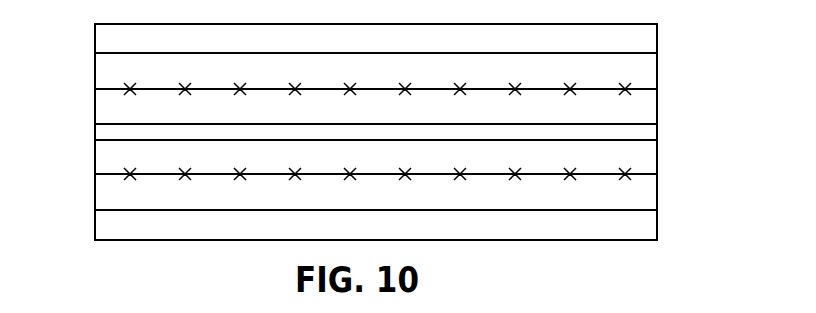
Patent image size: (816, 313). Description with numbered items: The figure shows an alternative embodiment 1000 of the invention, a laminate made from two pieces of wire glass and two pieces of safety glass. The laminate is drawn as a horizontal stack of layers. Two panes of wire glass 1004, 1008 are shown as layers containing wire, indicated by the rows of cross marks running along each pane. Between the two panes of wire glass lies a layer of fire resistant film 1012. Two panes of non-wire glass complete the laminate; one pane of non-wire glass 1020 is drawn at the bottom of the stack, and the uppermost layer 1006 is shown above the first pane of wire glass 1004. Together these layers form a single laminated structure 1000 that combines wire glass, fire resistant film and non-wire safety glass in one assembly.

The alternative embodiment 1000 is at (712, 116).
The top layer 1006 is at (102, 40).
The pane of wire glass 1004 is at (102, 75).
The layer of fire resistant film 1012 is at (102, 133).
The pane of wire glass 1008 is at (102, 195).
The pane of non-wire glass 1020 is at (102, 228).